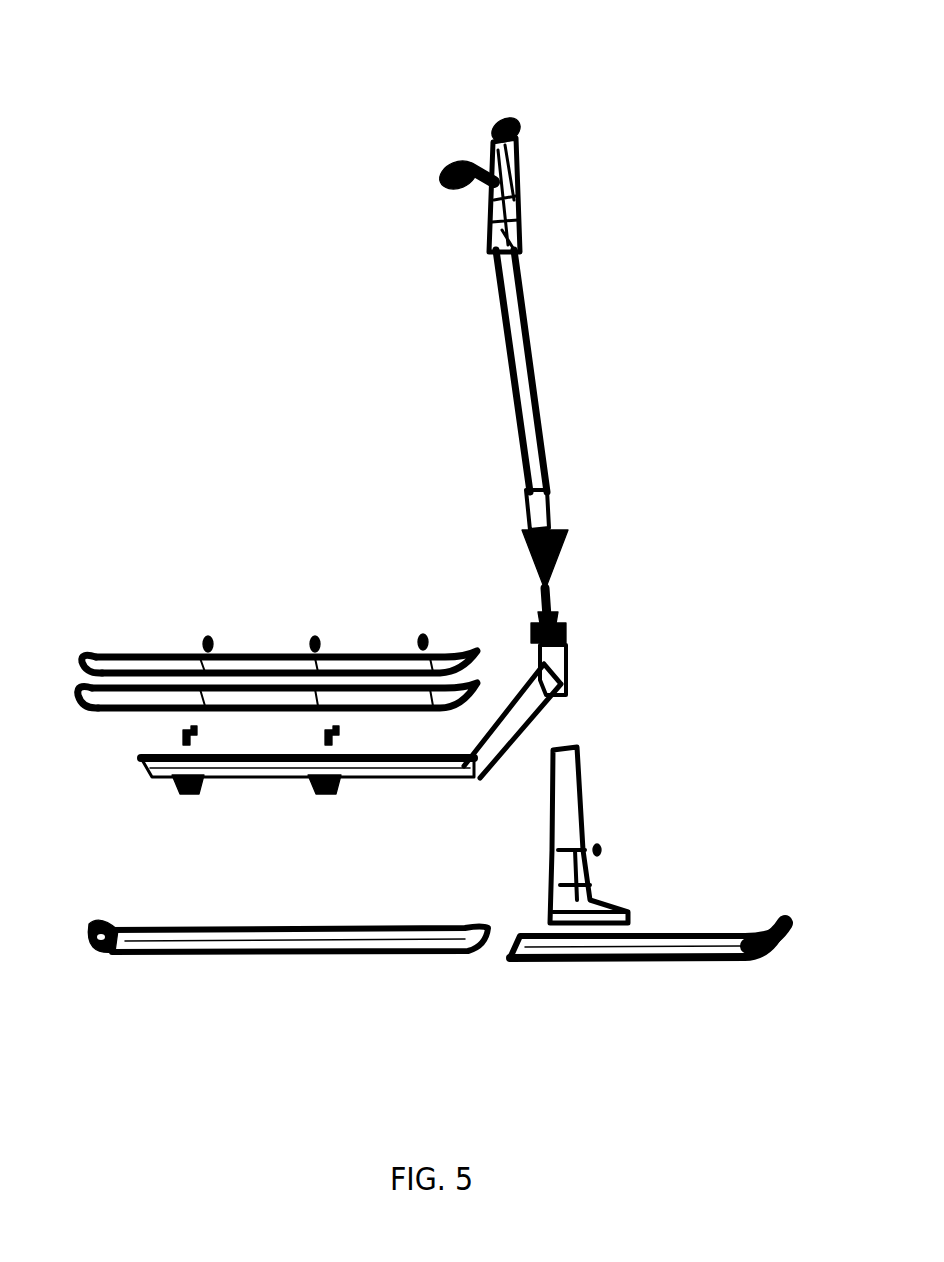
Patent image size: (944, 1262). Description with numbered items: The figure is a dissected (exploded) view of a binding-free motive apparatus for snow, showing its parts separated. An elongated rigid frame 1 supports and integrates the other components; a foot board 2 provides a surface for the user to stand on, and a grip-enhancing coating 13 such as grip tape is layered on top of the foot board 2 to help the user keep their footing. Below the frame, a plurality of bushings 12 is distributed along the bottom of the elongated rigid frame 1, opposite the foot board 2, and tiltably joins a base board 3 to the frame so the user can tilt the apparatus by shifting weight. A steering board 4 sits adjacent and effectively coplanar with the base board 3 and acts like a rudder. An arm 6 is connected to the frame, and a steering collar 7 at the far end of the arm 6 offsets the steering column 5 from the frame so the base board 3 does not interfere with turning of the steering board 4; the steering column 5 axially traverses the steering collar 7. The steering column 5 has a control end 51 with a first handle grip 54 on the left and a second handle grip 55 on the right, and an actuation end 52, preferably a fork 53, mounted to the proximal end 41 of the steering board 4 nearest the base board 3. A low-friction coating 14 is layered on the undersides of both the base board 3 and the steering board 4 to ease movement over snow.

The elongated rigid frame 1 is at (412, 776).
The foot board 2 is at (126, 704).
The base board 3 is at (120, 955).
The steering board 4 is at (717, 960).
The steering column 5 is at (517, 387).
The arm 6 is at (495, 738).
The steering collar 7 is at (565, 666).
The bushings 12 is at (184, 794).
The grip-enhancing coating 13 is at (137, 663).
The low-friction coating 14 is at (258, 956).
The proximal end 41 is at (529, 964).
The control end 51 is at (544, 198).
The actuation end 52 is at (606, 788).
The fork 53 is at (597, 855).
The first handle grip 54 is at (507, 118).
The second handle grip 55 is at (440, 175).